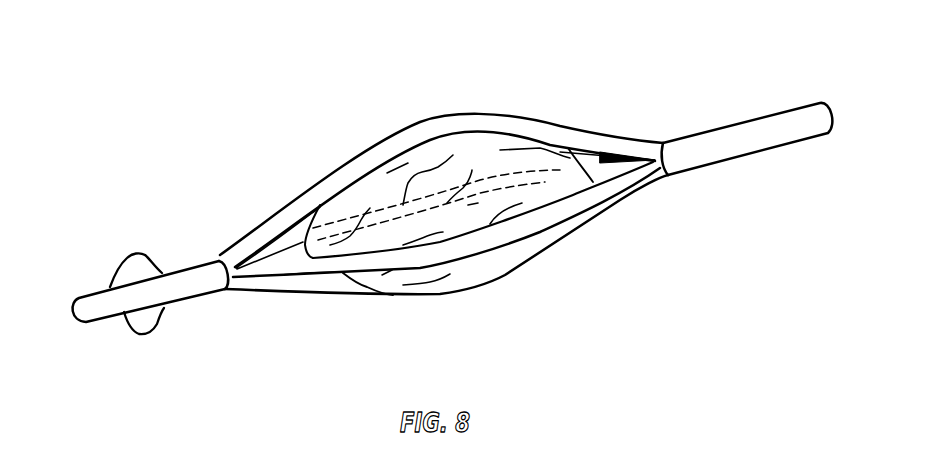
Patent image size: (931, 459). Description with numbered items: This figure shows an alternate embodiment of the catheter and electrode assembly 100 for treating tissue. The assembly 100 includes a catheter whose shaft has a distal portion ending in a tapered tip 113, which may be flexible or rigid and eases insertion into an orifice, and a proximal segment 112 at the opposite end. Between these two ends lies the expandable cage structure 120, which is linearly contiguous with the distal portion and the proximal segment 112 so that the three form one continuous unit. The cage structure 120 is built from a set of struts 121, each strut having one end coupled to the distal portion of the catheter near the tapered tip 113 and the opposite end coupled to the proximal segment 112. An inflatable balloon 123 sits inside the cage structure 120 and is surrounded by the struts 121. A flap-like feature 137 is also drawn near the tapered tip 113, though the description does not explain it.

The catheter and electrode assembly 100 is at (312, 54).
The proximal segment 112 is at (735, 147).
The tapered tip 113 is at (78, 300).
The expandable cage structure 120 is at (440, 305).
The struts 121 is at (395, 133).
The inflatable balloon 123 is at (550, 213).
The flap 137 is at (134, 253).